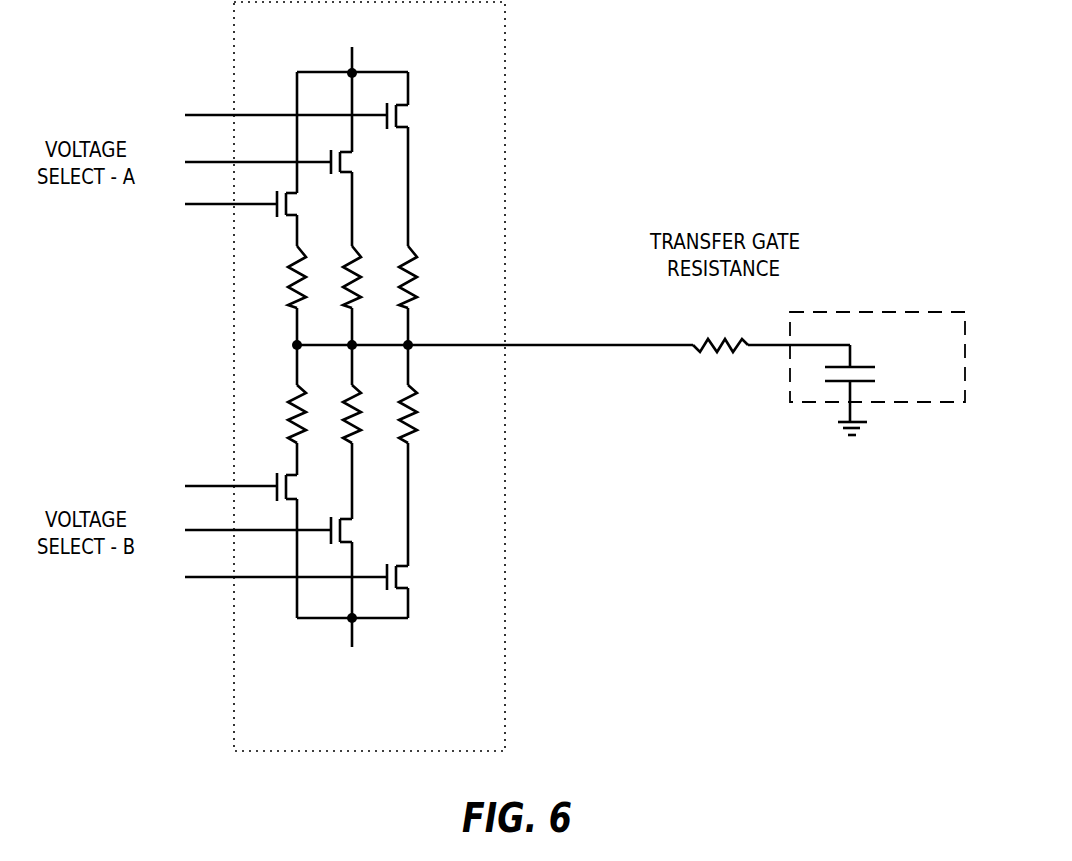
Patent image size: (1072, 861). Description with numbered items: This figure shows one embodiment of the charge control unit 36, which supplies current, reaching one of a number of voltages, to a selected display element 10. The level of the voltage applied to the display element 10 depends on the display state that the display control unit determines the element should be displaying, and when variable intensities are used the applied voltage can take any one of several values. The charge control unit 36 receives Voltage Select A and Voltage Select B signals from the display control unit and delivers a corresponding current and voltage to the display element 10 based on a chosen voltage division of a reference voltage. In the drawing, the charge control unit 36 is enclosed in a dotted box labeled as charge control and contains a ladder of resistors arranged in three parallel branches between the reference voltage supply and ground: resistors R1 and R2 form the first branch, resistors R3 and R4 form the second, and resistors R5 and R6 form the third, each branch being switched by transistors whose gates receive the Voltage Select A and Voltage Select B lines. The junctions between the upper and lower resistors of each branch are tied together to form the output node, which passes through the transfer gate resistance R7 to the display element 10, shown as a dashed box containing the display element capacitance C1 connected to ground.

The charge control unit 36 is at (505, 30).
The display element 10 is at (965, 324).
The resistor R1 is at (286, 277).
The resistor R2 is at (286, 414).
The resistor R3 is at (340, 277).
The resistor R4 is at (340, 414).
The resistor R5 is at (395, 277).
The resistor R6 is at (395, 414).
The transfer gate resistance R7 is at (720, 331).
The display element capacitance C1 is at (884, 390).